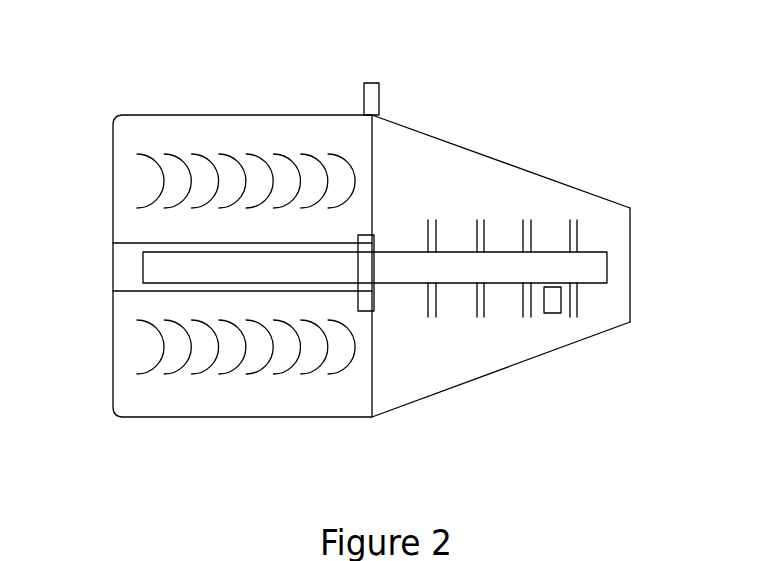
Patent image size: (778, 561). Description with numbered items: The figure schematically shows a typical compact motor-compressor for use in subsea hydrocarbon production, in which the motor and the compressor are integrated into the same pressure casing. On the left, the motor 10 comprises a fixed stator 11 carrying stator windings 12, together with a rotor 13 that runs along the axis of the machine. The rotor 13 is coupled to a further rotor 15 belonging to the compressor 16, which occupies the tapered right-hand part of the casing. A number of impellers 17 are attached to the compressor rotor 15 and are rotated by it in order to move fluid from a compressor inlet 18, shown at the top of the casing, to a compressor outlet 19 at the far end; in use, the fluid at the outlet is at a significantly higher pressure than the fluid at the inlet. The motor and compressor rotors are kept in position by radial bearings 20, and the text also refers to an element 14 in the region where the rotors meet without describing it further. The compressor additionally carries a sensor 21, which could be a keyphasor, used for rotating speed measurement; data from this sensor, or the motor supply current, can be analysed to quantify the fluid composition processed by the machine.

The motor 10 is at (262, 130).
The stator 11 is at (140, 175).
The stator windings 12 is at (188, 162).
The rotor 13 is at (160, 272).
The lower fins 14 is at (397, 285).
The compressor rotor 15 is at (402, 250).
The compressor 16 is at (477, 180).
The impellers 17 is at (582, 235).
The compressor inlet 18 is at (370, 83).
The compressor outlet 19 is at (631, 287).
The radial bearings 20 is at (363, 313).
The sensor 21 is at (550, 313).